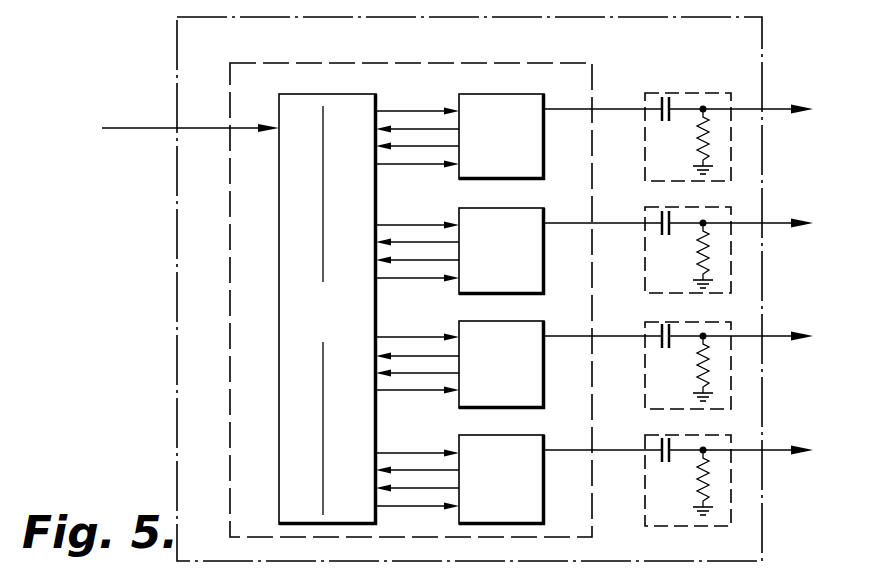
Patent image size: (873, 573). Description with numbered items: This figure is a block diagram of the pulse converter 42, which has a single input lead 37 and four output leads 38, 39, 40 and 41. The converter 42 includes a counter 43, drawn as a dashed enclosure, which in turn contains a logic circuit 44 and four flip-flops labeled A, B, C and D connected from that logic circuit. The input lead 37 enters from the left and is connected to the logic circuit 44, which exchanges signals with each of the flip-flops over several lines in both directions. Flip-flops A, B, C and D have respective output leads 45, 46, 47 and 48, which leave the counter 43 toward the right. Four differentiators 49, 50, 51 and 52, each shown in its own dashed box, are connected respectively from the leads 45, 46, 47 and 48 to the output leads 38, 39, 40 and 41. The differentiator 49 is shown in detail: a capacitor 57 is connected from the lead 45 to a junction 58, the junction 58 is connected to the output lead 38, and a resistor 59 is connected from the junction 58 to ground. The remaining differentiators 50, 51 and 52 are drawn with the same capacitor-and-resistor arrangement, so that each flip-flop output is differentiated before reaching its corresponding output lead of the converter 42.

The input lead 37 is at (152, 129).
The output lead 38 is at (783, 107).
The output lead 39 is at (780, 221).
The output lead 40 is at (780, 334).
The output lead 41 is at (780, 448).
The converter 42 is at (160, 377).
The counter 43 is at (214, 280).
The logic circuit 44 is at (279, 480).
The output lead 45 is at (560, 129).
The output lead 46 is at (560, 243).
The output lead 47 is at (560, 352).
The output lead 48 is at (560, 469).
The differentiator 49 is at (701, 117).
The differentiator 50 is at (654, 200).
The differentiator 51 is at (653, 314).
The differentiator 52 is at (656, 428).
The capacitor 57 is at (662, 120).
The junction 58 is at (704, 106).
The resistor 59 is at (712, 136).